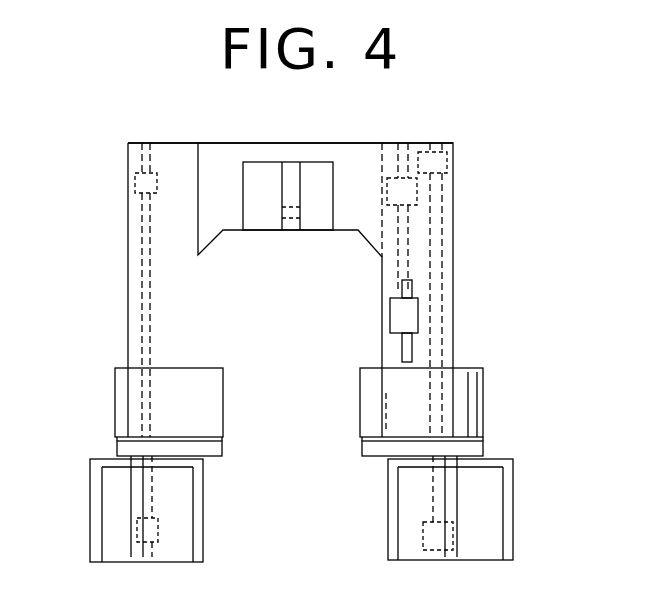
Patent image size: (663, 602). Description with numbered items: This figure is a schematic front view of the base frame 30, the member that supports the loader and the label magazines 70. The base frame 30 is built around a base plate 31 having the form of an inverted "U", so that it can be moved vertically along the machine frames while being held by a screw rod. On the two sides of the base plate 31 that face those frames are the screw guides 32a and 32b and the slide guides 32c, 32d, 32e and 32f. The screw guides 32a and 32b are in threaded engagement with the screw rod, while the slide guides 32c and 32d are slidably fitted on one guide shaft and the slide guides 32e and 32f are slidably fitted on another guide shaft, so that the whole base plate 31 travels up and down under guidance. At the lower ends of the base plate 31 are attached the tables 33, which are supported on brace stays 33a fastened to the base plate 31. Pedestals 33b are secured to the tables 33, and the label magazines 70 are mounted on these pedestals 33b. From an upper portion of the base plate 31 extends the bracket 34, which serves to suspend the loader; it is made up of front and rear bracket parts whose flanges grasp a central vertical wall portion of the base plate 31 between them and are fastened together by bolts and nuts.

The base frame 30 is at (464, 172).
The base plate 31 is at (349, 162).
The screw guide 32a is at (417, 193).
The screw guide 32b is at (412, 319).
The slide guide 32c is at (459, 157).
The slide guide 32d is at (455, 533).
The slide guide 32e is at (132, 182).
The slide guide 32f is at (158, 528).
The table 33 is at (112, 462).
The brace stay 33a is at (197, 512).
The pedestal 33b is at (222, 447).
The bracket 34 is at (287, 178).
The label magazine 70 is at (128, 399).